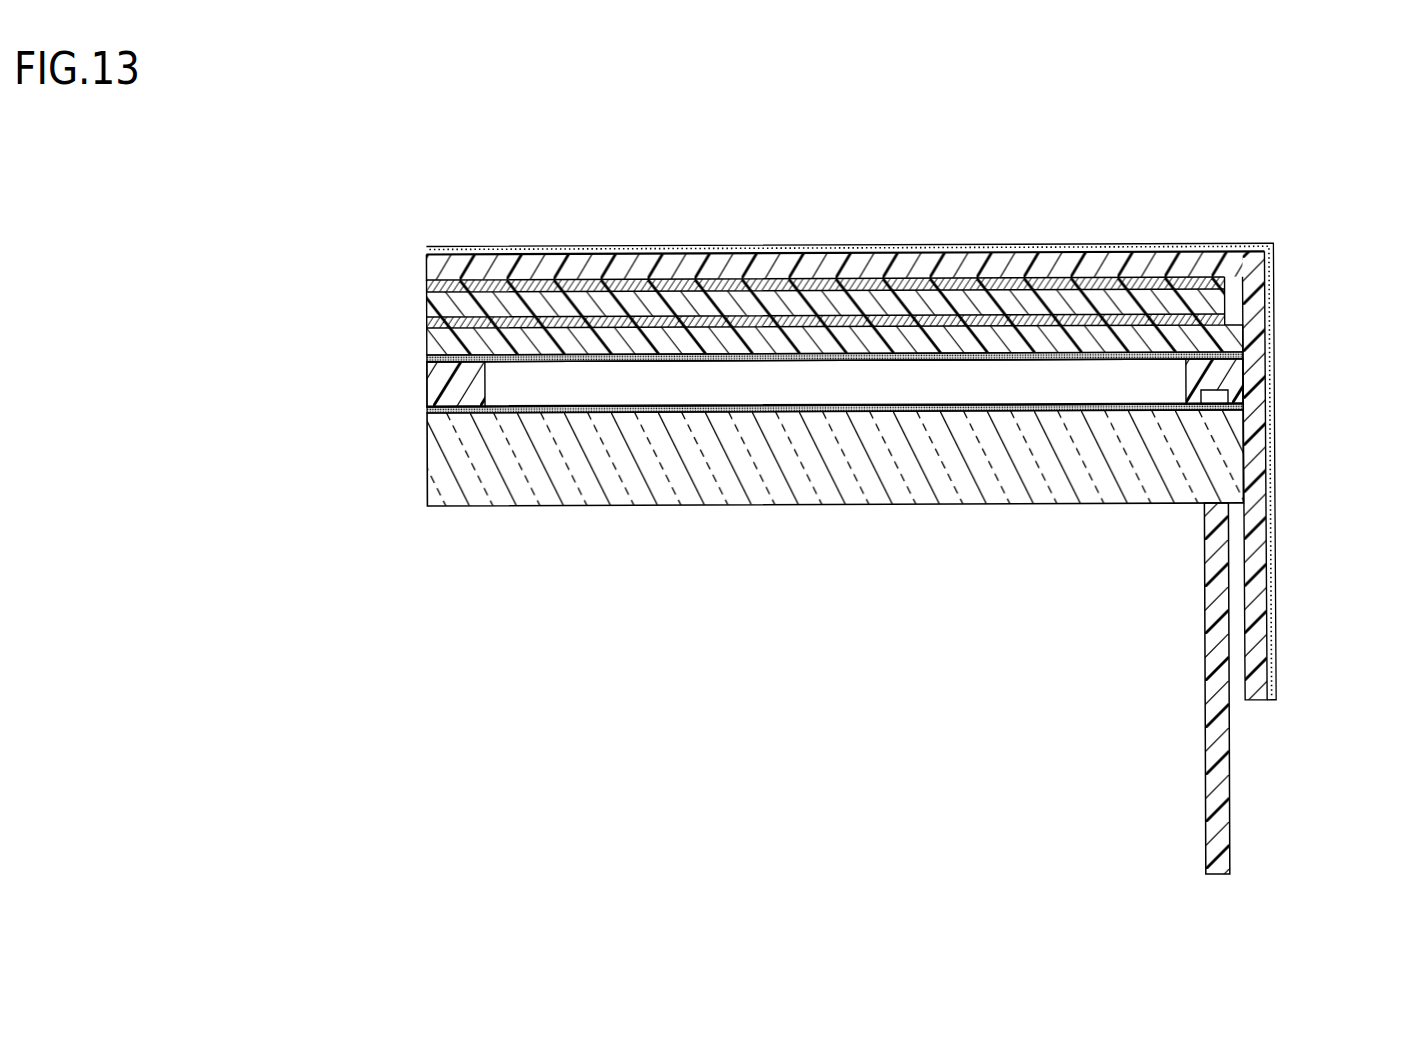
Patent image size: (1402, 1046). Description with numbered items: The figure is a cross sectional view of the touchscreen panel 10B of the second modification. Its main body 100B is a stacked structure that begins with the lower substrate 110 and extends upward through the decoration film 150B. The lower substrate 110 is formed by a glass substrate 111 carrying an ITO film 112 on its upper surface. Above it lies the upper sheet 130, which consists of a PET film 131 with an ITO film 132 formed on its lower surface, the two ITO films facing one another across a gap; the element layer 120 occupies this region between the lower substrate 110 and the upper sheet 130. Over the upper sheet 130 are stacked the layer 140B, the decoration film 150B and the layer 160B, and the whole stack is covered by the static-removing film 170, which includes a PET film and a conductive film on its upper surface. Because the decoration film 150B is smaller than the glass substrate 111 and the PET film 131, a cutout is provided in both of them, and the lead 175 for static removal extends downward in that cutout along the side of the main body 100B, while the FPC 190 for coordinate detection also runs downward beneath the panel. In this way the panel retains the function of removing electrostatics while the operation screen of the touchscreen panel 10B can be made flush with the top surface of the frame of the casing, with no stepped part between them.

The touchscreen panel 10B is at (840, 149).
The main body 100B is at (203, 251).
The lower substrate 110 is at (300, 452).
The glass substrate 111 is at (428, 477).
The ITO film 112 is at (428, 411).
The element layer 120 is at (428, 383).
The upper sheet 130 is at (300, 329).
The PET film 131 is at (428, 343).
The ITO film 132 is at (428, 361).
The first optical layer 140B is at (438, 322).
The decoration film 150B is at (438, 302).
The cover layer 160B is at (438, 285).
The static-removing film 170 is at (753, 245).
The lead for static removal 175 is at (1278, 469).
The FPC for coordinate detection 190 is at (1214, 775).